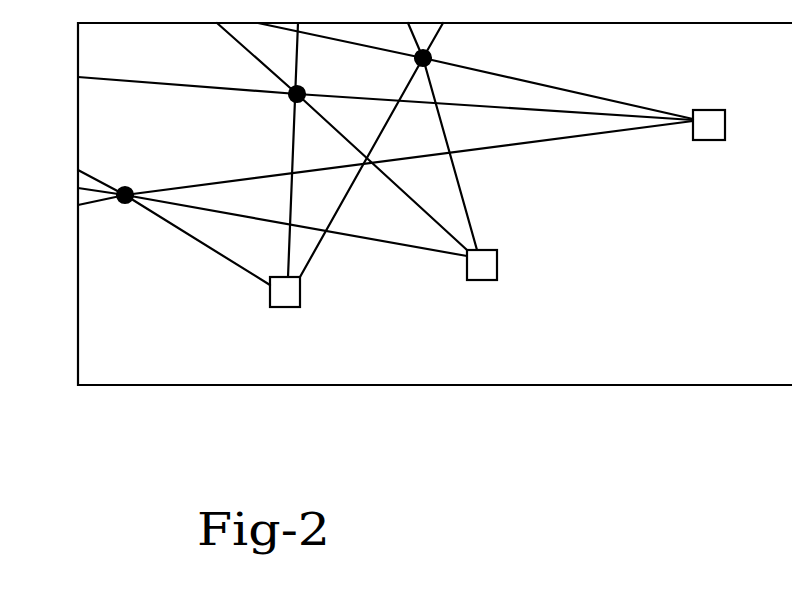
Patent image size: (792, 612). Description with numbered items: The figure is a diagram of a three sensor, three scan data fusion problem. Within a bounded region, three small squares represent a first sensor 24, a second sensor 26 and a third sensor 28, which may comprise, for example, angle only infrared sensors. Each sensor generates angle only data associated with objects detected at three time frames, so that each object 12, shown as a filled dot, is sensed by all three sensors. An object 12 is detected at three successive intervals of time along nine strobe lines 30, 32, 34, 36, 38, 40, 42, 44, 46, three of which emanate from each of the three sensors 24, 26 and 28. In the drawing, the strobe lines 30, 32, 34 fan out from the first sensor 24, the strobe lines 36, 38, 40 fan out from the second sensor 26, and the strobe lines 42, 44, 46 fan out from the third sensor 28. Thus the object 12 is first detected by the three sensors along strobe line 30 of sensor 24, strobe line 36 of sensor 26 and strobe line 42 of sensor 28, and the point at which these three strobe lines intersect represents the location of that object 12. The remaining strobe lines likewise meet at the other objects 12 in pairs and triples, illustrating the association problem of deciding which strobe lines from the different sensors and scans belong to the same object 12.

The object 12 is at (128, 187).
The first sensor 24 is at (270, 297).
The second sensor 26 is at (498, 257).
The third sensor 28 is at (713, 110).
The strobe line 30 is at (188, 240).
The strobe line 32 is at (292, 168).
The strobe line 34 is at (340, 217).
The strobe line 36 is at (412, 252).
The strobe line 38 is at (418, 212).
The strobe line 40 is at (468, 200).
The strobe line 42 is at (622, 133).
The strobe line 44 is at (498, 110).
The strobe line 46 is at (577, 90).